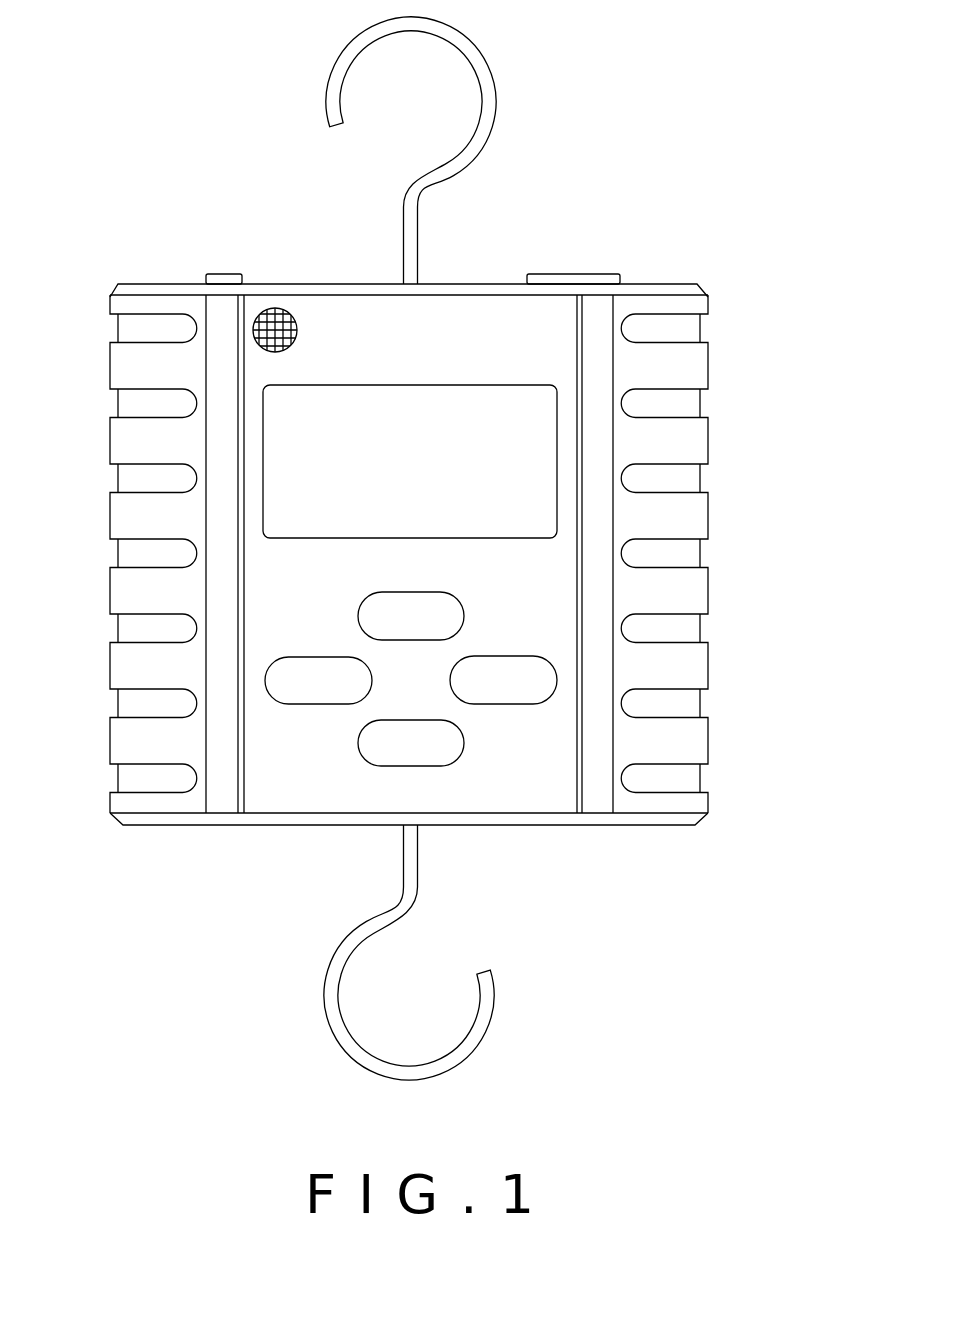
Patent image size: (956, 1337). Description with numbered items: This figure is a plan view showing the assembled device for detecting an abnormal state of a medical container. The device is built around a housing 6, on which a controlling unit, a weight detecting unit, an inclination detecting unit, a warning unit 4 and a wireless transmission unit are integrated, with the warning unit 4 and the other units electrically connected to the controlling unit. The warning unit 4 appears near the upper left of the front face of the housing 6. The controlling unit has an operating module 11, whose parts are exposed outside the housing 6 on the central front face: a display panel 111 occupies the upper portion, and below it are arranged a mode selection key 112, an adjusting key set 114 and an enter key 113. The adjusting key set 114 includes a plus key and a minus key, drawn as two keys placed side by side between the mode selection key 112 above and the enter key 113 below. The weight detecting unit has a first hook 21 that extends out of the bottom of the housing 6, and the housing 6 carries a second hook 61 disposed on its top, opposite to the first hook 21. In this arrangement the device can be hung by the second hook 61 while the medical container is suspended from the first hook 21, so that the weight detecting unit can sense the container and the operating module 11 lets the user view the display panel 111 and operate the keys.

The second hook 61 is at (497, 88).
The first hook 21 is at (325, 978).
The warning unit 4 is at (253, 331).
The housing 6 is at (137, 588).
The operating module 11 is at (564, 575).
The display panel 111 is at (530, 433).
The mode selection key 112 is at (464, 611).
The enter key 113 is at (573, 725).
The adjusting key set 114 is at (372, 679).